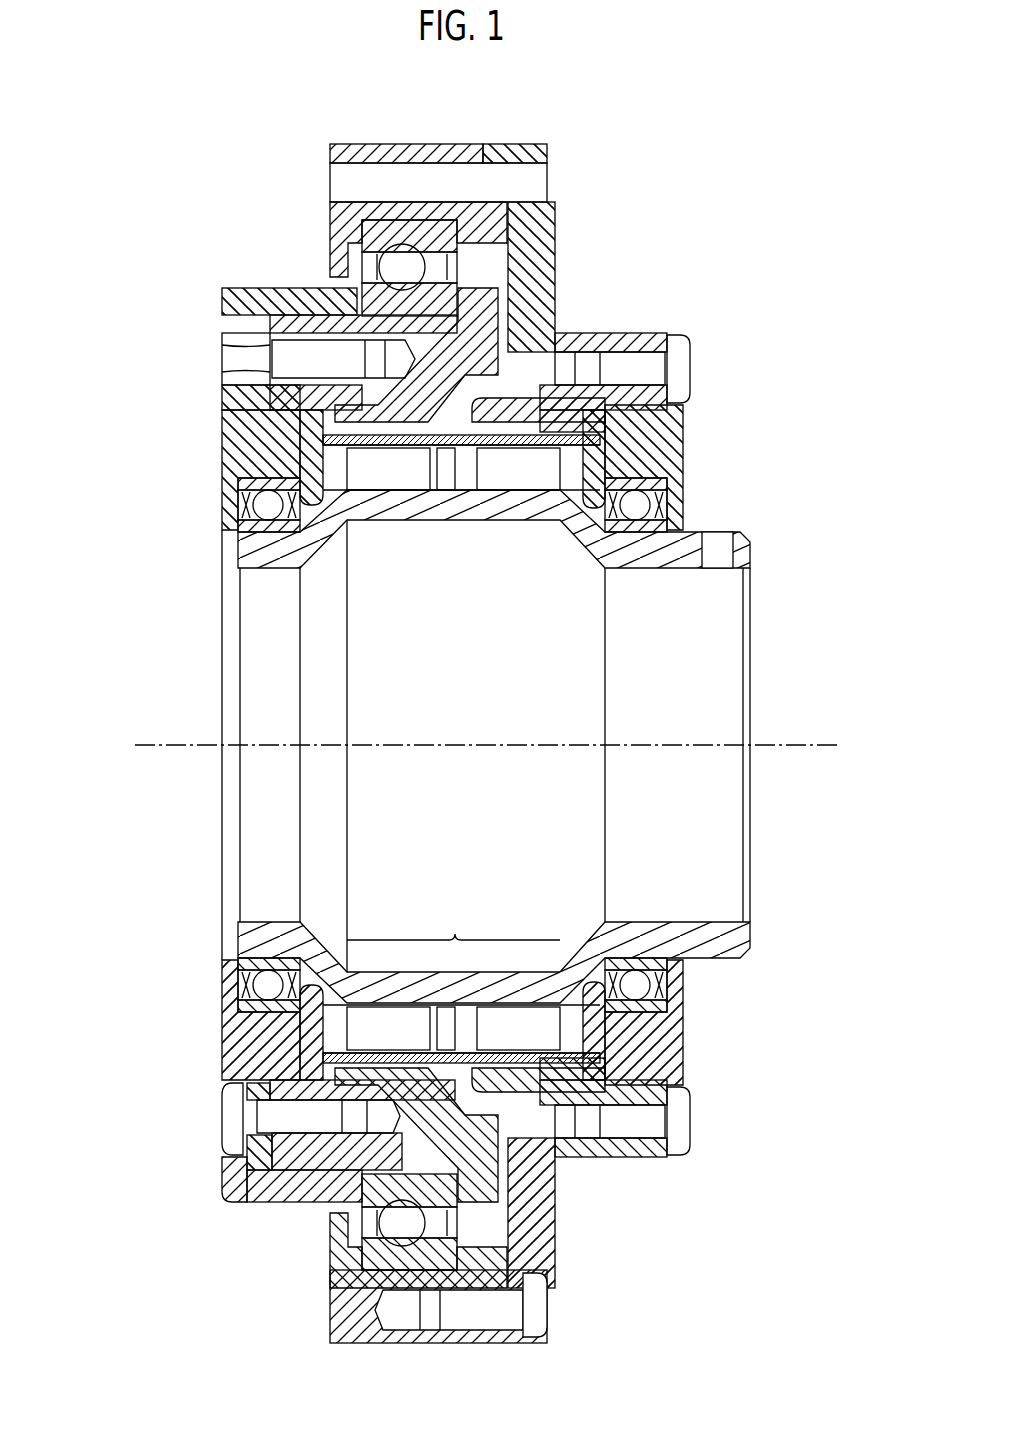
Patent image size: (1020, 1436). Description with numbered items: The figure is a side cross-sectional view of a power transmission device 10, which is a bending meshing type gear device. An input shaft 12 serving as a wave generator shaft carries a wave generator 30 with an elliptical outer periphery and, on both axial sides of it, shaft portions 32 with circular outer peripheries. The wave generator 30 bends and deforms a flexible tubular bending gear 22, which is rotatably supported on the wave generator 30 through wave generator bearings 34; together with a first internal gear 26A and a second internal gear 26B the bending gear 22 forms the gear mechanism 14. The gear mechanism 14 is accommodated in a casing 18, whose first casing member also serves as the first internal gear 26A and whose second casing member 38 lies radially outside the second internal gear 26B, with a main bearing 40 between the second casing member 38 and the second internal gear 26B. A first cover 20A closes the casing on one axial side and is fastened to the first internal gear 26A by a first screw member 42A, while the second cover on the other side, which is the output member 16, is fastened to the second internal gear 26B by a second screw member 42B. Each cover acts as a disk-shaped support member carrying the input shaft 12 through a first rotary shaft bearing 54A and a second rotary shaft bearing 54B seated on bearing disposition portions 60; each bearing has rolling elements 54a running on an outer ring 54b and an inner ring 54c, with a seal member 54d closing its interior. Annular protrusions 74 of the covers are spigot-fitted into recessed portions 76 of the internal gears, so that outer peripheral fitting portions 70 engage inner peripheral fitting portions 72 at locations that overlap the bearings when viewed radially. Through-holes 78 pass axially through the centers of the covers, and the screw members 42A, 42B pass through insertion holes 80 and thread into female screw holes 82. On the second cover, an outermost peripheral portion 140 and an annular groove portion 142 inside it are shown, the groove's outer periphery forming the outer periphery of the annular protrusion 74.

The power transmission device 10 is at (790, 155).
The input shaft 12 is at (778, 658).
The gear mechanism 14 is at (474, 386).
The output member 16 is at (225, 315).
The casing 18 is at (487, 123).
The first cover 20A is at (690, 410).
The bending gear 22 is at (470, 447).
The first internal gear 26A is at (555, 215).
The second internal gear 26B is at (295, 305).
The wave generator 30 is at (453, 974).
The shaft portions 32 is at (273, 925).
The wave generator bearings 34 is at (400, 503).
The second casing member 38 is at (435, 144).
The main bearing 40 is at (351, 248).
The first screw member 42A is at (690, 365).
The second screw member 42B is at (224, 1118).
The first rotary shaft bearing 54A is at (692, 510).
The second rotary shaft bearing 54B is at (230, 509).
The rolling elements 54a is at (650, 540).
The outer ring 54b is at (655, 480).
The inner ring 54c is at (685, 540).
The seal member 54d is at (600, 535).
The bearing disposition portions 60 is at (238, 990).
The outer peripheral fitting portions 70 is at (275, 1130).
The inner peripheral fitting portions 72 is at (260, 1055).
The annular protrusions 74 is at (312, 1000).
The recessed portions 76 is at (316, 1105).
The through-holes 78 is at (230, 950).
The insertion holes 80 is at (645, 385).
The female screw holes 82 is at (590, 380).
The outermost peripheral portion 140 is at (250, 300).
The annular groove portion 142 is at (290, 360).